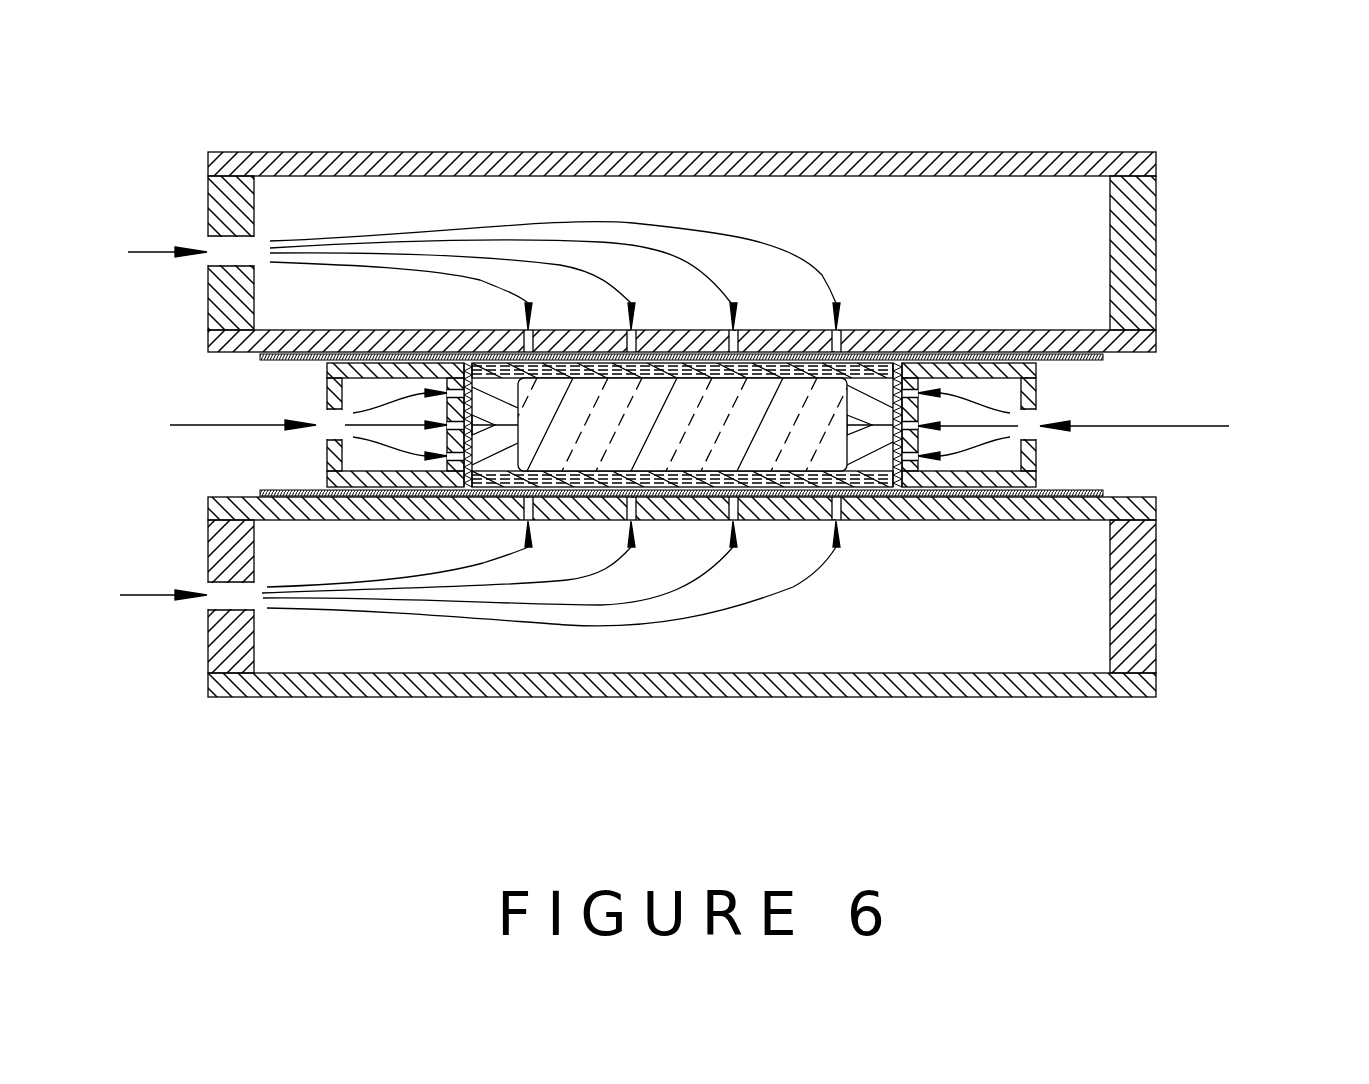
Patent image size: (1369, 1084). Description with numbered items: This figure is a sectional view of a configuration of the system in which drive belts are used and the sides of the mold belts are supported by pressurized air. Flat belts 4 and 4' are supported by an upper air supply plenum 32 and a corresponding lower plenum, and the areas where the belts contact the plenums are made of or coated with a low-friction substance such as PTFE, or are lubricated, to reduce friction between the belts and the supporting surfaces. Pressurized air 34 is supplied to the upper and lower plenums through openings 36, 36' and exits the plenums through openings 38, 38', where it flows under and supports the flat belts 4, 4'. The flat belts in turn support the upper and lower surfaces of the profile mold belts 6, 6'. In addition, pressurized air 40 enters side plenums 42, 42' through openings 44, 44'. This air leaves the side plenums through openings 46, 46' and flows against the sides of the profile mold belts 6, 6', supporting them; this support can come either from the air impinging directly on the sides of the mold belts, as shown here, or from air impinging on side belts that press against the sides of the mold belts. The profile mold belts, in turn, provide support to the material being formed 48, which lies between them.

The flat belt 4 is at (771, 307).
The flat belt 4' is at (773, 526).
The profile mold belt 6 is at (614, 276).
The profile mold belt 6' is at (774, 617).
The upper air supply plenum 32 is at (1103, 153).
The pressurized air 34 is at (147, 426).
The opening 36 is at (172, 221).
The opening 36' is at (167, 629).
The opening 38 is at (715, 214).
The opening 38' is at (682, 643).
The pressurized air 40 is at (706, 421).
The side plenum 42 is at (292, 403).
The side plenum 42' is at (1116, 429).
The opening 44 is at (231, 460).
The opening 44' is at (1164, 389).
The opening 46 is at (343, 575).
The opening 46' is at (1080, 526).
The material being formed 48 is at (693, 428).